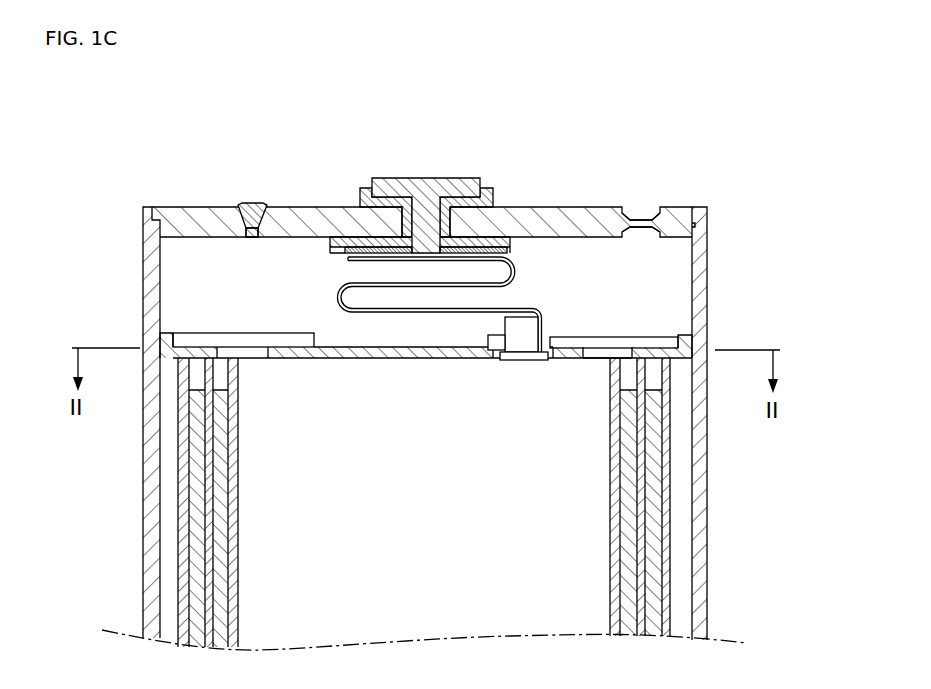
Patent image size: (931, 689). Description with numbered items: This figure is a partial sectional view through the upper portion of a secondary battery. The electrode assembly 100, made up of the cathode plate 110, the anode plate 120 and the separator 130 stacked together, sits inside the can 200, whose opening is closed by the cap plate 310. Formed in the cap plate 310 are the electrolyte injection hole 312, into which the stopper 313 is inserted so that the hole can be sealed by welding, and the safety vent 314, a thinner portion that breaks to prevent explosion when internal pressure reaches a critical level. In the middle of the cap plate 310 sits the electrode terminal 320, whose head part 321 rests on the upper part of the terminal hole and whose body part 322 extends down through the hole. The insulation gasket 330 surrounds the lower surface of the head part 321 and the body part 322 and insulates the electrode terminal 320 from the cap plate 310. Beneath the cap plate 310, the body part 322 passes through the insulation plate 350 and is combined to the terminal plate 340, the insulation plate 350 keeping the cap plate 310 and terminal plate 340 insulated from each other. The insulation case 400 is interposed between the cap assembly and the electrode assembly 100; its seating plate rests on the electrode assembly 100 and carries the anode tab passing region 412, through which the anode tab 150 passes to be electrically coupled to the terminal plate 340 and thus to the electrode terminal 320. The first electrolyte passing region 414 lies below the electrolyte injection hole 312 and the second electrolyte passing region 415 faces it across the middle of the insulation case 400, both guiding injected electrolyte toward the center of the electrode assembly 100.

The electrode assembly 100 is at (501, 502).
The cathode plate 110 is at (660, 513).
The anode plate 120 is at (635, 583).
The separator 130 is at (640, 543).
The anode tab 150 is at (510, 273).
The can 200 is at (702, 453).
The cap plate 310 is at (422, 219).
The electrolyte injection hole 312 is at (252, 240).
The stopper 313 is at (247, 203).
The safety vent 314 is at (648, 222).
The electrode terminal 320 is at (439, 175).
The head part 321 is at (427, 190).
The body part 322 is at (408, 223).
The insulation gasket 330 is at (485, 190).
The terminal plate 340 is at (507, 252).
The insulation plate 350 is at (439, 197).
The insulation case 400 is at (415, 323).
The anode tab passing region 412 is at (553, 350).
The first electrolyte passing region 414 is at (240, 333).
The second electrolyte passing region 415 is at (627, 352).